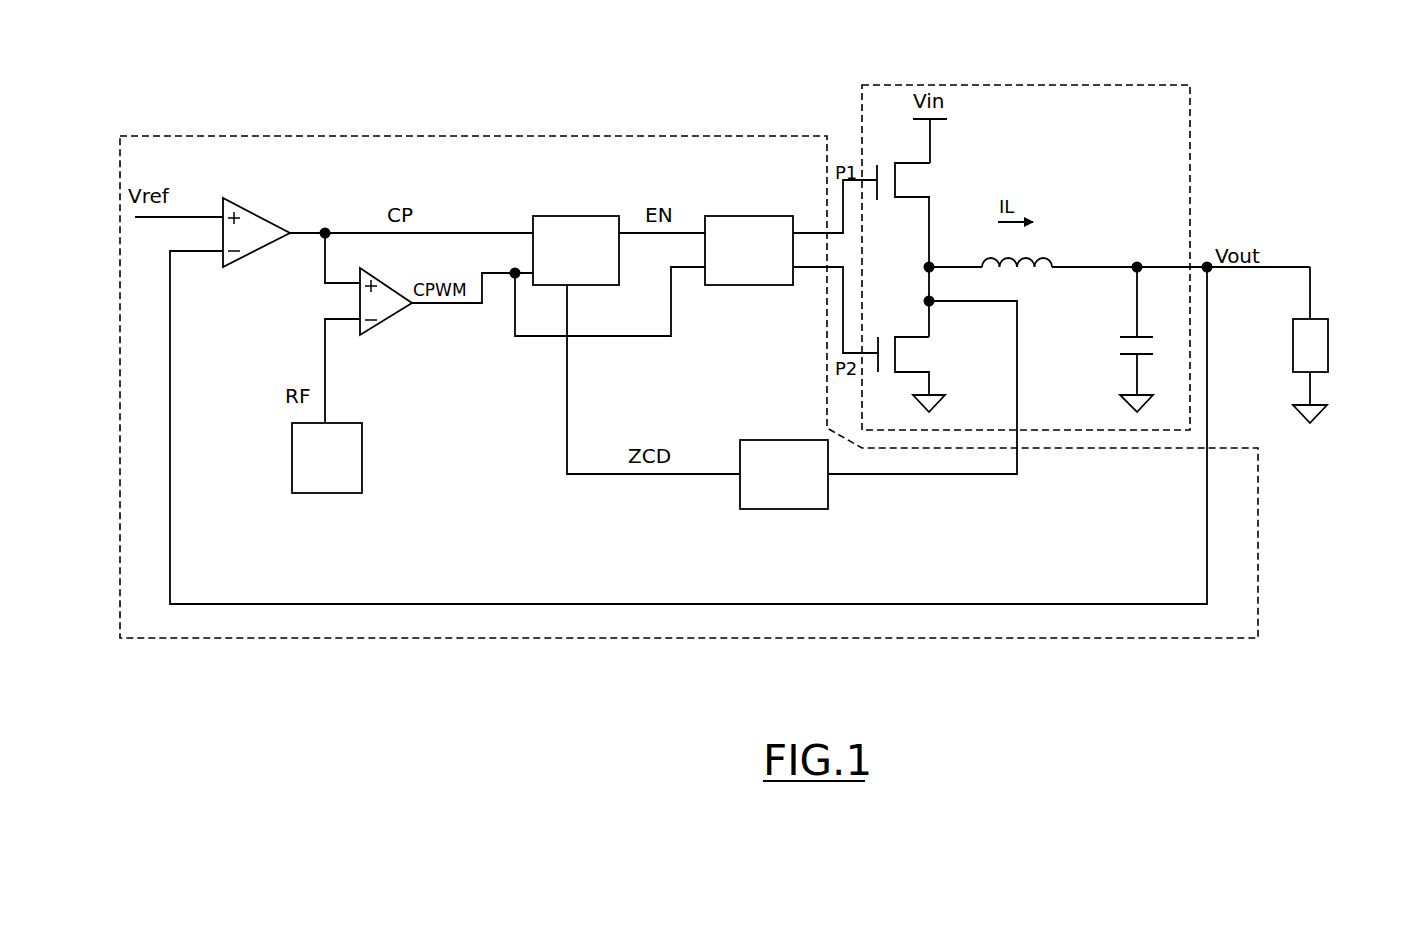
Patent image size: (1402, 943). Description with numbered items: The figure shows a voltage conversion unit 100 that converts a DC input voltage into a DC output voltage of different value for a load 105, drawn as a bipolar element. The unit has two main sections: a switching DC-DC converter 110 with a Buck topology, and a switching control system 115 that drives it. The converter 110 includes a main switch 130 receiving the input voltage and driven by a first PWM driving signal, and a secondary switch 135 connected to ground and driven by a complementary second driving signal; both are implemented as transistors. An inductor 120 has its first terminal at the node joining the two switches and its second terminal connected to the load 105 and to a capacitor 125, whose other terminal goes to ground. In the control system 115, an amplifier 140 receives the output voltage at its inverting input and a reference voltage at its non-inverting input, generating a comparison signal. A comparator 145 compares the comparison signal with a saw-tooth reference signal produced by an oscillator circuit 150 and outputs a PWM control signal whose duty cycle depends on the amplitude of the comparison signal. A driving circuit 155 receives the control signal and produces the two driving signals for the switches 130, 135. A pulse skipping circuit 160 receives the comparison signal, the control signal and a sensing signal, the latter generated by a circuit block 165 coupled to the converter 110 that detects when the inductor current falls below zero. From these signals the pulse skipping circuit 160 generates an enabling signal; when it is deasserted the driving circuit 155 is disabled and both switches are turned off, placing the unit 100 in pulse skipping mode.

The voltage conversion unit 100 is at (149, 741).
The load 105 is at (1347, 345).
The switching DC-DC converter 110 is at (1033, 224).
The switching control system 115 is at (689, 356).
The inductor 120 is at (1050, 240).
The capacitor 125 is at (1100, 339).
The main switch 130 is at (941, 159).
The secondary switch 135 is at (938, 363).
The amplifier 140 is at (273, 216).
The comparator 145 is at (391, 328).
The oscillator circuit 150 is at (363, 457).
The driving circuit 155 is at (749, 219).
The pulse skipping circuit 160 is at (585, 219).
The circuit block 165 is at (784, 443).